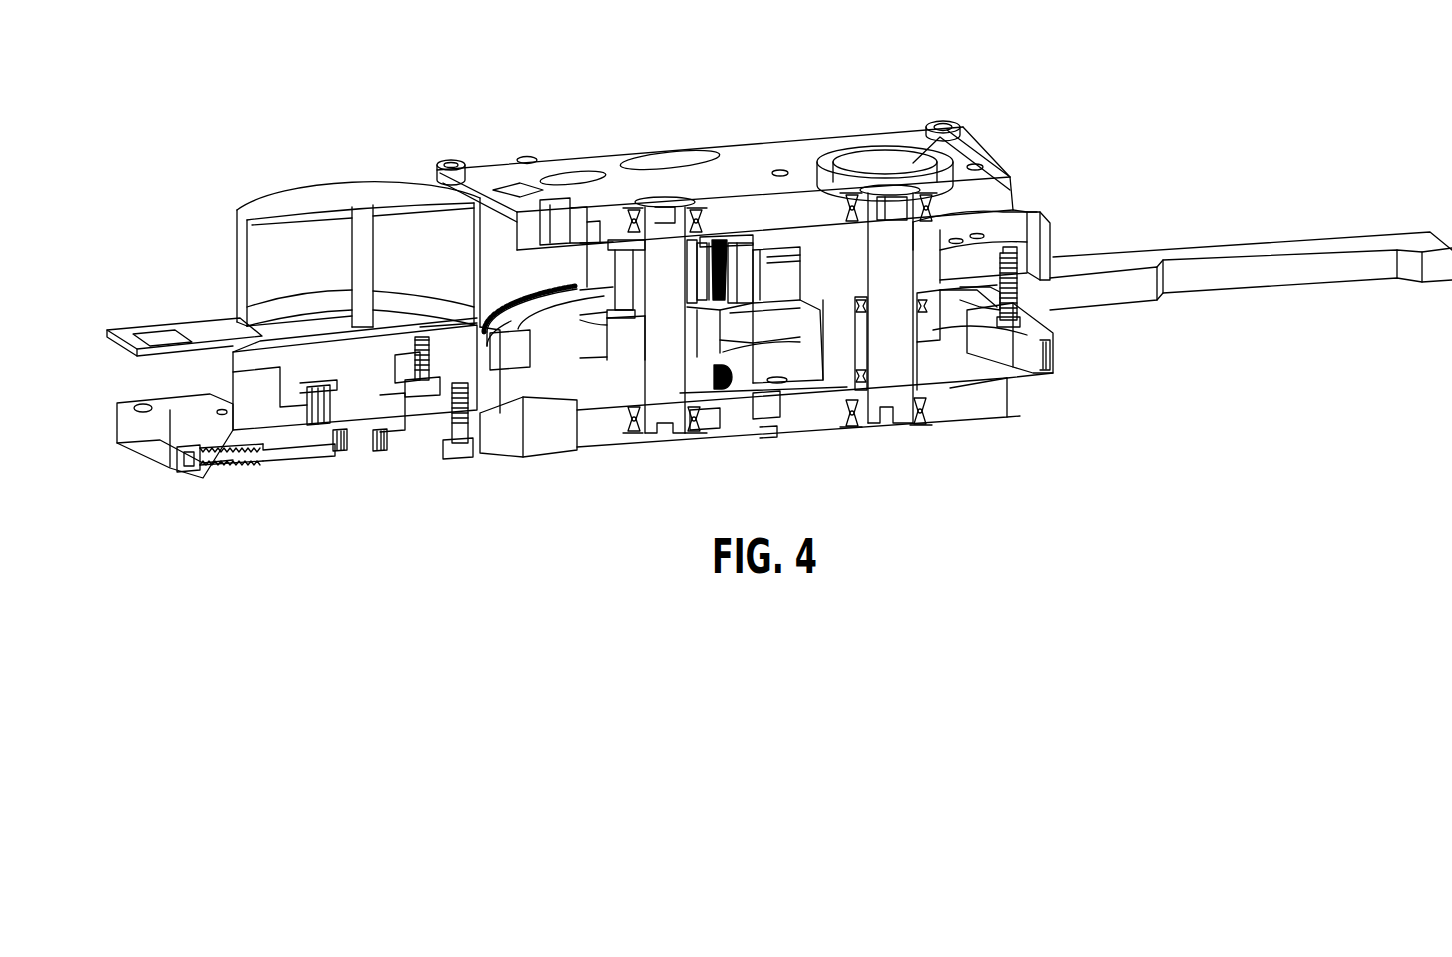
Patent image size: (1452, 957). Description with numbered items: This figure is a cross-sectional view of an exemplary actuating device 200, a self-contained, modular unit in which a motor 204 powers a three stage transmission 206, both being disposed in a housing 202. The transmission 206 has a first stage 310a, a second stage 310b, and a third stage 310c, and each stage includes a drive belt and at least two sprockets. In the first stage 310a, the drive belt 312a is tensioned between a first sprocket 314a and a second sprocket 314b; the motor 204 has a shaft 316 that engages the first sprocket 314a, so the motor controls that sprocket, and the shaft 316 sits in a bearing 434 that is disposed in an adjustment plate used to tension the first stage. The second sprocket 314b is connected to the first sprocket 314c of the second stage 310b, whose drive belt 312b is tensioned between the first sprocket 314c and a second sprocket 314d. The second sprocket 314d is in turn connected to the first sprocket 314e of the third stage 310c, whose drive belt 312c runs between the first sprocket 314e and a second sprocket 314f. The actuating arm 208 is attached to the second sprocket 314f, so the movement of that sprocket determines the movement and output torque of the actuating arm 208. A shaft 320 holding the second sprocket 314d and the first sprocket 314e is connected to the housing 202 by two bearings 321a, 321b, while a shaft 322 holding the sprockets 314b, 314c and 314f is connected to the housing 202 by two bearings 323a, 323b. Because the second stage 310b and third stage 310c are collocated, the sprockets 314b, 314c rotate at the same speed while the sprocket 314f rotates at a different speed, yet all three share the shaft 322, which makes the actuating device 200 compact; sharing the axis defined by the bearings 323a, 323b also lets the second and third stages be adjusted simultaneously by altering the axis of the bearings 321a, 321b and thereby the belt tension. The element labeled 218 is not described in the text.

The actuating device 200 is at (260, 105).
The housing 202 is at (553, 150).
The motor 204 is at (270, 202).
The transmission 206 is at (1100, 400).
The actuating arm 208 is at (1377, 240).
The hub 218 is at (867, 178).
The first stage 310a is at (1046, 420).
The second stage 310b is at (539, 252).
The third stage 310c is at (1059, 185).
The drive belt 312a is at (297, 412).
The drive belt 312b is at (498, 349).
The drive belt 312c is at (1050, 240).
The first sprocket 314a is at (428, 452).
The second sprocket 314b is at (1013, 340).
The first sprocket 314c is at (927, 297).
The second sprocket 314d is at (480, 307).
The first sprocket 314e is at (755, 208).
The second sprocket 314f is at (1020, 215).
The shaft 316 is at (356, 446).
The shaft 320 is at (660, 238).
The bearing 321a is at (637, 433).
The bearing 321b is at (703, 190).
The shaft 322 is at (907, 227).
The bearing 323a is at (913, 398).
The bearing 323b is at (948, 190).
The bearing 434 is at (318, 450).